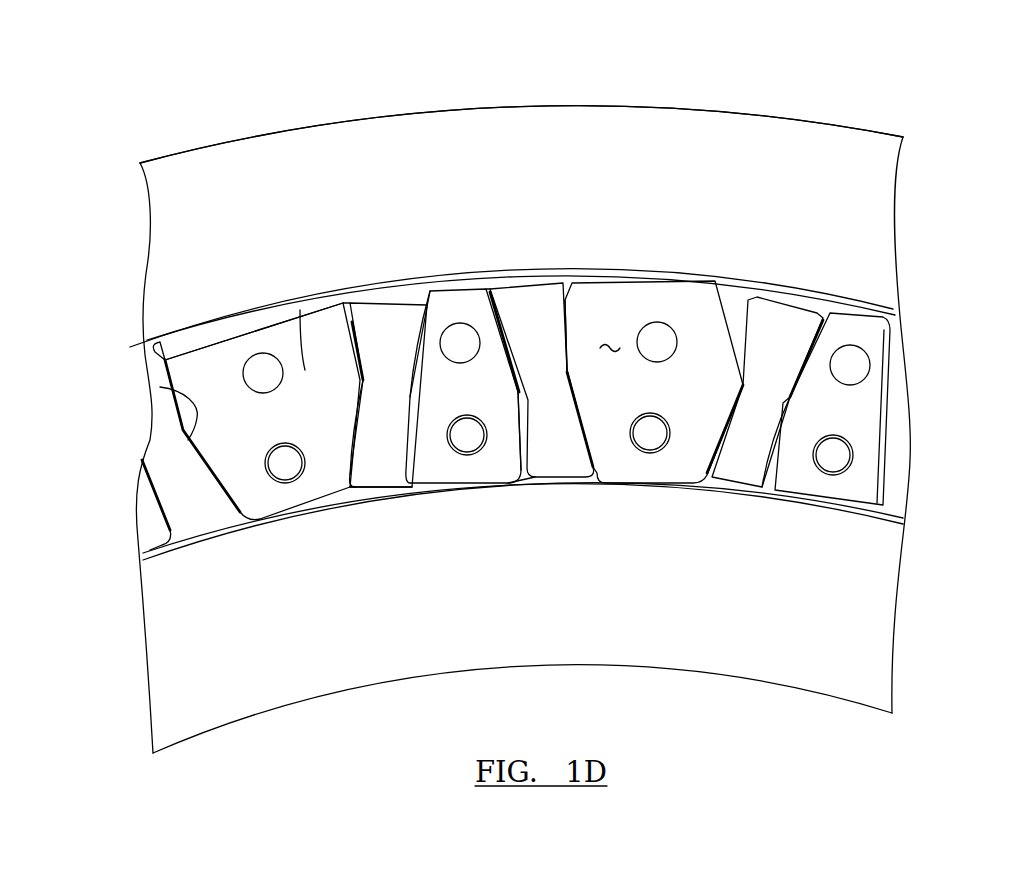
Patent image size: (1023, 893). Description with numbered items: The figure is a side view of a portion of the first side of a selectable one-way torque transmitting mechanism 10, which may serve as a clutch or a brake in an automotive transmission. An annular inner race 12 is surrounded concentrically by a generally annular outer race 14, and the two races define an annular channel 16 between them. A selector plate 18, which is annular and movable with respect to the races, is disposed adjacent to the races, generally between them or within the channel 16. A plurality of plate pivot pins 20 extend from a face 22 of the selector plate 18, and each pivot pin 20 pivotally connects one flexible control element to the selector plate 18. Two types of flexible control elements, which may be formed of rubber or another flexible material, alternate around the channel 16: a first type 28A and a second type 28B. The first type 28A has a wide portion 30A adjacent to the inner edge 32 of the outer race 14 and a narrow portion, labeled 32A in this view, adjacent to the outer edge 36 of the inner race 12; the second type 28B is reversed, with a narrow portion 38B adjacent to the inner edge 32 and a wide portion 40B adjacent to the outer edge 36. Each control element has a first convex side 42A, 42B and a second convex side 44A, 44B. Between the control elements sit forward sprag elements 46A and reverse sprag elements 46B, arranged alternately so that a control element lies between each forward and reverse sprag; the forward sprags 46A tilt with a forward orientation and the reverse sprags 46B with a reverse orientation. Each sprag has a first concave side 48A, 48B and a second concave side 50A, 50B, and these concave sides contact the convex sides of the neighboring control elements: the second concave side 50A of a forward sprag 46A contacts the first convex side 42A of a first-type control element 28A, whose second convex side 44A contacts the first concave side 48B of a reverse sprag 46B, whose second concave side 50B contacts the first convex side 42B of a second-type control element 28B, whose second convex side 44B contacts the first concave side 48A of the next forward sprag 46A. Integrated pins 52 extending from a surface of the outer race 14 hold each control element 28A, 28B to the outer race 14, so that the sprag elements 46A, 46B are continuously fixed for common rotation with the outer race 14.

The selectable one-way torque transmitting mechanism 10 is at (896, 80).
The inner race 12 is at (784, 667).
The outer race 14 is at (700, 140).
The annular channel 16 is at (615, 337).
The selector plate 18 is at (160, 342).
The plate pivot pin 20 is at (262, 372).
The face 22 is at (348, 500).
The first type of flexible control element 28A is at (262, 505).
The second type of flexible control element 28B is at (422, 490).
The wide portion 30A is at (210, 330).
The inner edge 32 is at (207, 350).
The block edge 32A is at (310, 490).
The outer edge 36 is at (197, 537).
The narrow portion 38B is at (475, 310).
The wide portion 40B is at (488, 465).
The first convex side 42A is at (183, 427).
The first convex side 42B is at (378, 455).
The second convex side 44A is at (350, 345).
The second convex side 44B is at (515, 347).
The forward sprag element 46A is at (163, 460).
The reverse sprag element 46B is at (382, 323).
The first concave side 48A is at (157, 503).
The first concave side 48B is at (304, 325).
The second concave side 50A is at (160, 387).
The second concave side 50B is at (423, 310).
The integrated pin 52 is at (285, 465).